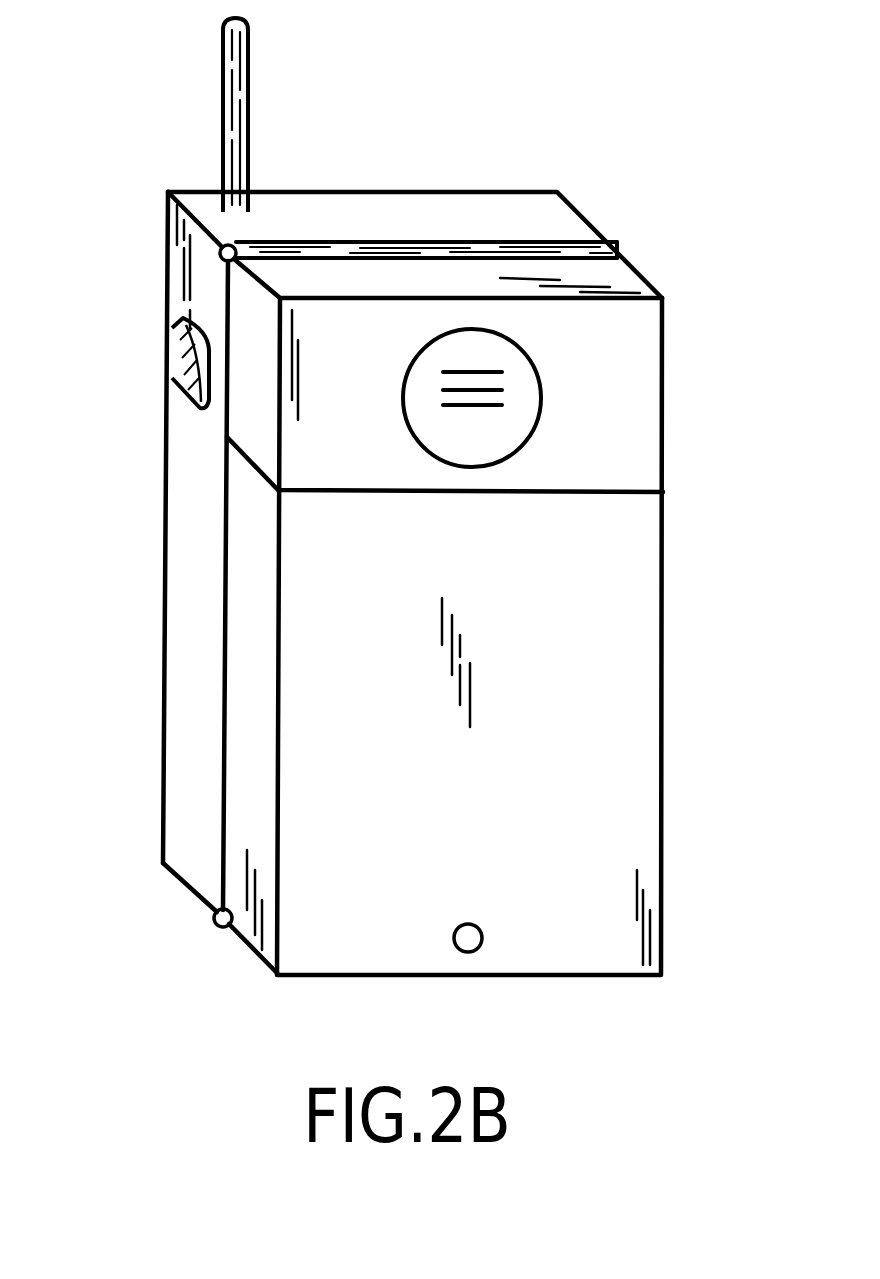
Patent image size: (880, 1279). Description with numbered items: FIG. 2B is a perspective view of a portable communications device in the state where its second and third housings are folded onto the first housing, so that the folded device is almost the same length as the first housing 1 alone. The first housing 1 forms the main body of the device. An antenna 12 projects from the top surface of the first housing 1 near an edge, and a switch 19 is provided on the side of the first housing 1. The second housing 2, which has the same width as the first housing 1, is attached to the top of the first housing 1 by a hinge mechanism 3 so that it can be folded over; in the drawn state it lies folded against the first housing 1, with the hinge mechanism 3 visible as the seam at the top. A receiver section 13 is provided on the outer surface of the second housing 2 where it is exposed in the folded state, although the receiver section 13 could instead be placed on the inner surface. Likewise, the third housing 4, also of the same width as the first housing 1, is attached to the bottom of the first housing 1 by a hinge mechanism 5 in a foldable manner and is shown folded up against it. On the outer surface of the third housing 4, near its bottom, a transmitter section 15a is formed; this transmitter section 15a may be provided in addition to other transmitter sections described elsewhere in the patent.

The first housing 1 is at (183, 582).
The second housing 2 is at (643, 345).
The hinge mechanism 3 is at (617, 250).
The third housing 4 is at (590, 955).
The hinge mechanism 5 is at (215, 925).
The antenna 12 is at (248, 66).
The receiver section 13 is at (500, 447).
The transmitter section 15a is at (460, 952).
The switch 19 is at (175, 385).